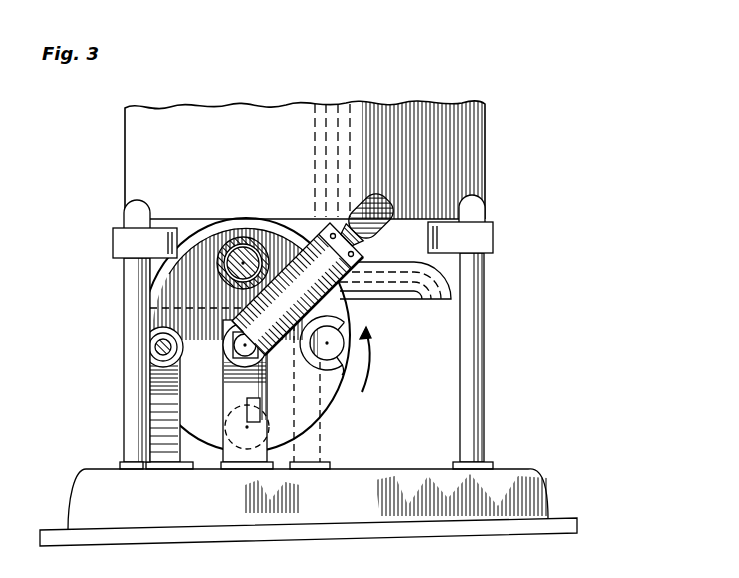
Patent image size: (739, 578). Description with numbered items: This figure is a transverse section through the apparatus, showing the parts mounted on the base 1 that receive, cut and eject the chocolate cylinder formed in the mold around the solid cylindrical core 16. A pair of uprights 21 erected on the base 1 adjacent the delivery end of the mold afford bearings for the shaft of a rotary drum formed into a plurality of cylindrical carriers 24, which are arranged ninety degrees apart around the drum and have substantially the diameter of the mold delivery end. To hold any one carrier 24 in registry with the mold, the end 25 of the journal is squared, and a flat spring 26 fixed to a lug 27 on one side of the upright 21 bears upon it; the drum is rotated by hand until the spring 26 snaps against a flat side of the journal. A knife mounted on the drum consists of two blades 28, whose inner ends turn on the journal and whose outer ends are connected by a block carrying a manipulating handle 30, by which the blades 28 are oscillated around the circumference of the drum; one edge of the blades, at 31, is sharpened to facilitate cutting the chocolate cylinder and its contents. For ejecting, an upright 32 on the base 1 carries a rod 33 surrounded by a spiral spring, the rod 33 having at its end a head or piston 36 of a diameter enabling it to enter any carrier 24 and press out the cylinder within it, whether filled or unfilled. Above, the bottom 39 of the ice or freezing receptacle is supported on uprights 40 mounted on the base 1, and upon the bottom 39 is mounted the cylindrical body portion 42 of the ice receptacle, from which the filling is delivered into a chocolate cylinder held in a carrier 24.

The base 1 is at (87, 496).
The core 16 is at (201, 250).
The uprights 21 is at (300, 447).
The cylindrical carriers 24 is at (335, 338).
The squared end of the journal 25 is at (236, 347).
The flat spring 26 is at (255, 387).
The lug 27 is at (252, 408).
The knife blades 28 is at (338, 272).
The manipulating handle 30 is at (390, 212).
The sharpened edge 31 is at (300, 255).
The upright 32 is at (160, 390).
The rod 33 is at (158, 350).
The head or piston 36 is at (148, 340).
The bottom of the ice receptacle 39 is at (437, 302).
The uprights 40 is at (130, 283).
The cylindrical body portion 42 is at (485, 146).